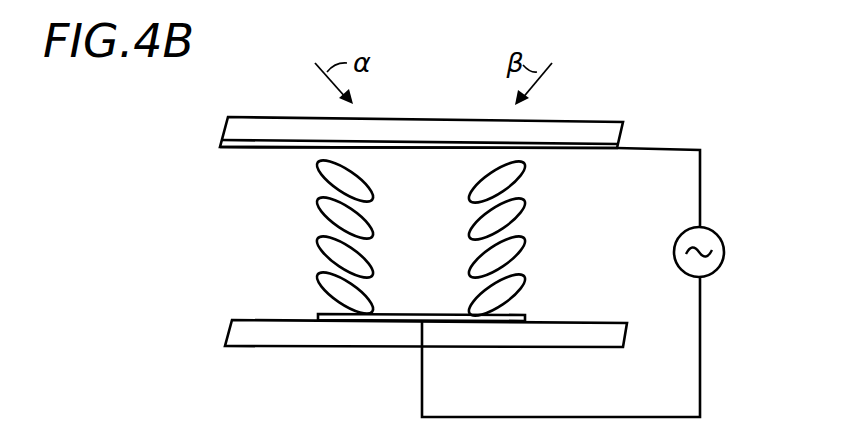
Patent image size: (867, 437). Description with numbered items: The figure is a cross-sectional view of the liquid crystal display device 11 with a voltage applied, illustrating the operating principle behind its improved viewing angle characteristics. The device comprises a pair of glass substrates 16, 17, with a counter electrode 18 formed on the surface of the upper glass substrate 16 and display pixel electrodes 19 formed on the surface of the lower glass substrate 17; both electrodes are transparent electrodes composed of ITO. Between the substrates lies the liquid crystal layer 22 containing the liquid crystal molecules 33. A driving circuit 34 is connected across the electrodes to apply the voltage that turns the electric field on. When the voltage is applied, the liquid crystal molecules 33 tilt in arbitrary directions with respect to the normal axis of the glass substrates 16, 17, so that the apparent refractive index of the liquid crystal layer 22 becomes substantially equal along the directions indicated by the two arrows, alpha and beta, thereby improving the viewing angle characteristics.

The liquid crystal display device 11 is at (667, 124).
The glass substrate 16 is at (597, 130).
The glass substrate 17 is at (545, 338).
The counter electrode 18 is at (437, 145).
The display pixel electrodes 19 is at (460, 323).
The liquid crystal layer 22 is at (280, 287).
The liquid crystal molecules 33 is at (353, 302).
The driving circuit 34 is at (724, 252).